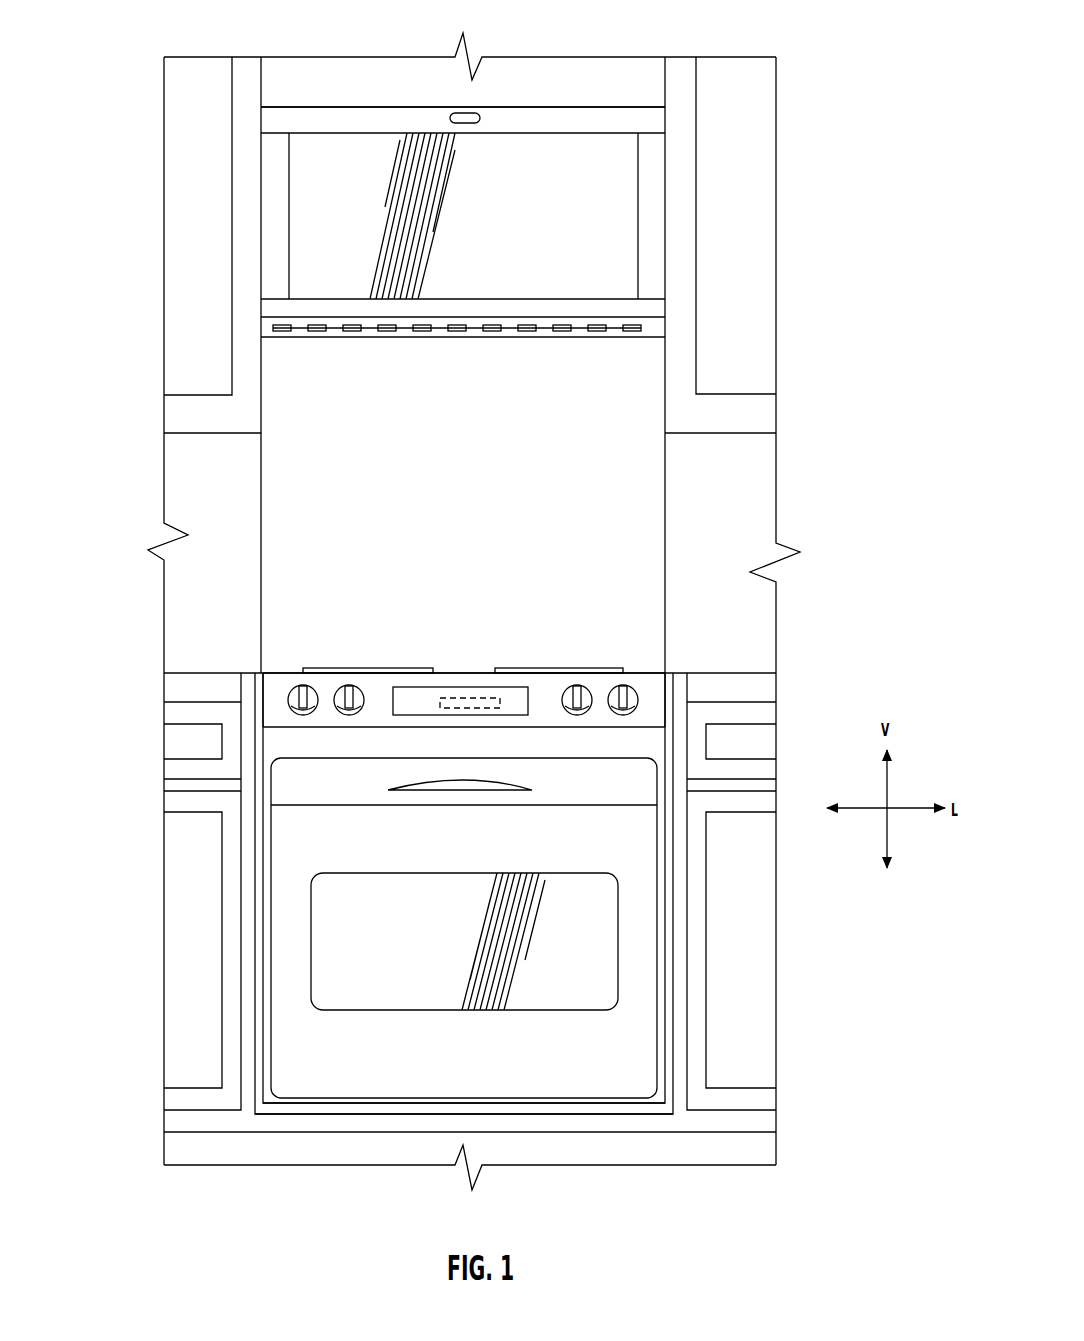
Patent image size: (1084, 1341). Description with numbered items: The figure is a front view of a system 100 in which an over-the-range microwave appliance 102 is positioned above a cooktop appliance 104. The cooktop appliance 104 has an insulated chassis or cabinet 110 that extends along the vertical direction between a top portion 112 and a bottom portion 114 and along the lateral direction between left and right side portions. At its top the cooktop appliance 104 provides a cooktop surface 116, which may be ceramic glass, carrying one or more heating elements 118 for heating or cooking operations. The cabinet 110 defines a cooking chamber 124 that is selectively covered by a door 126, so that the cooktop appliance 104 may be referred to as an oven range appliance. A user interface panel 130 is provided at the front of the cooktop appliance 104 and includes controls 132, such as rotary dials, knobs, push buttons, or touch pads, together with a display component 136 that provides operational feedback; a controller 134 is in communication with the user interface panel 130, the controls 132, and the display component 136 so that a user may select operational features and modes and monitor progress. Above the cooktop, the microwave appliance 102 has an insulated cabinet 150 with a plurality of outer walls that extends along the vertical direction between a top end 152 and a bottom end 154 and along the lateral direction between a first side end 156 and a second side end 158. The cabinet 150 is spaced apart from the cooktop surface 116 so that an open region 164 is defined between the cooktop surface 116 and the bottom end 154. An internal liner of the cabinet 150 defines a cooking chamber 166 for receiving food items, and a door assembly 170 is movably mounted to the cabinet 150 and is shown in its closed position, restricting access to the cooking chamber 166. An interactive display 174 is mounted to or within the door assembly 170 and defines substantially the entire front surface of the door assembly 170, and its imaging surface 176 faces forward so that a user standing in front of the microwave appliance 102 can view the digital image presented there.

The system 100 is at (104, 118).
The microwave appliance 102 is at (649, 216).
The cooktop appliance 104 is at (245, 920).
The cabinet 110 is at (263, 1103).
The top portion 112 is at (250, 666).
The bottom portion 114 is at (310, 1117).
The cooktop surface 116 is at (285, 666).
The heating elements 118 is at (368, 668).
The cooking chamber 124 is at (445, 983).
The door 126 is at (645, 948).
The user interface panel 130 is at (648, 685).
The controls 132 is at (638, 700).
The controller 134 is at (456, 687).
The display component 136 is at (503, 686).
The cabinet 150 is at (665, 147).
The top end 152 is at (389, 102).
The bottom end 154 is at (650, 341).
The first side end 156 is at (668, 287).
The second side end 158 is at (259, 272).
The open region 164 is at (410, 507).
The cooking chamber 166 is at (330, 177).
The door assembly 170 is at (626, 118).
The interactive display 174 is at (537, 154).
The imaging surface 176 is at (438, 274).